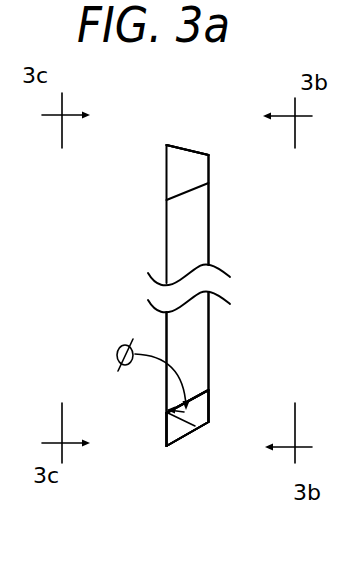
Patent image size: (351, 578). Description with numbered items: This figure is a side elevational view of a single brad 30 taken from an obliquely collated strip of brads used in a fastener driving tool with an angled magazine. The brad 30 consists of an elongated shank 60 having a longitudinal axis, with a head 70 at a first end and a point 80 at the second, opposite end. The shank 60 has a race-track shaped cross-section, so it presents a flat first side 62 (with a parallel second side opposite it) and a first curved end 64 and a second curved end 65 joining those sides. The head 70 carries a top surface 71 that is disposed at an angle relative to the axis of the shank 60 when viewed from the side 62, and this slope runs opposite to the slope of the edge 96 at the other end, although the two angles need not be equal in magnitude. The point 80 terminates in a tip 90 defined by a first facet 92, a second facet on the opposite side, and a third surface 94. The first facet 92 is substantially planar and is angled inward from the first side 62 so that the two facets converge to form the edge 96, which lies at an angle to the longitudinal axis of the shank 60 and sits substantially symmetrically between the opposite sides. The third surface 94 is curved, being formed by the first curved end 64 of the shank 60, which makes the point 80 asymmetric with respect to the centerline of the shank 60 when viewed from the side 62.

The brad 30 is at (250, 207).
The head 70 is at (170, 128).
The top surface 71 is at (195, 150).
The second curved end 65 is at (209, 227).
The first curved end 64 is at (167, 322).
The shank 60 is at (213, 327).
The first side 62 is at (198, 354).
The third surface 94 is at (167, 430).
The first facet 92 is at (200, 410).
The tip 90 is at (166, 446).
The edge 96 is at (205, 425).
The point 80 is at (175, 466).